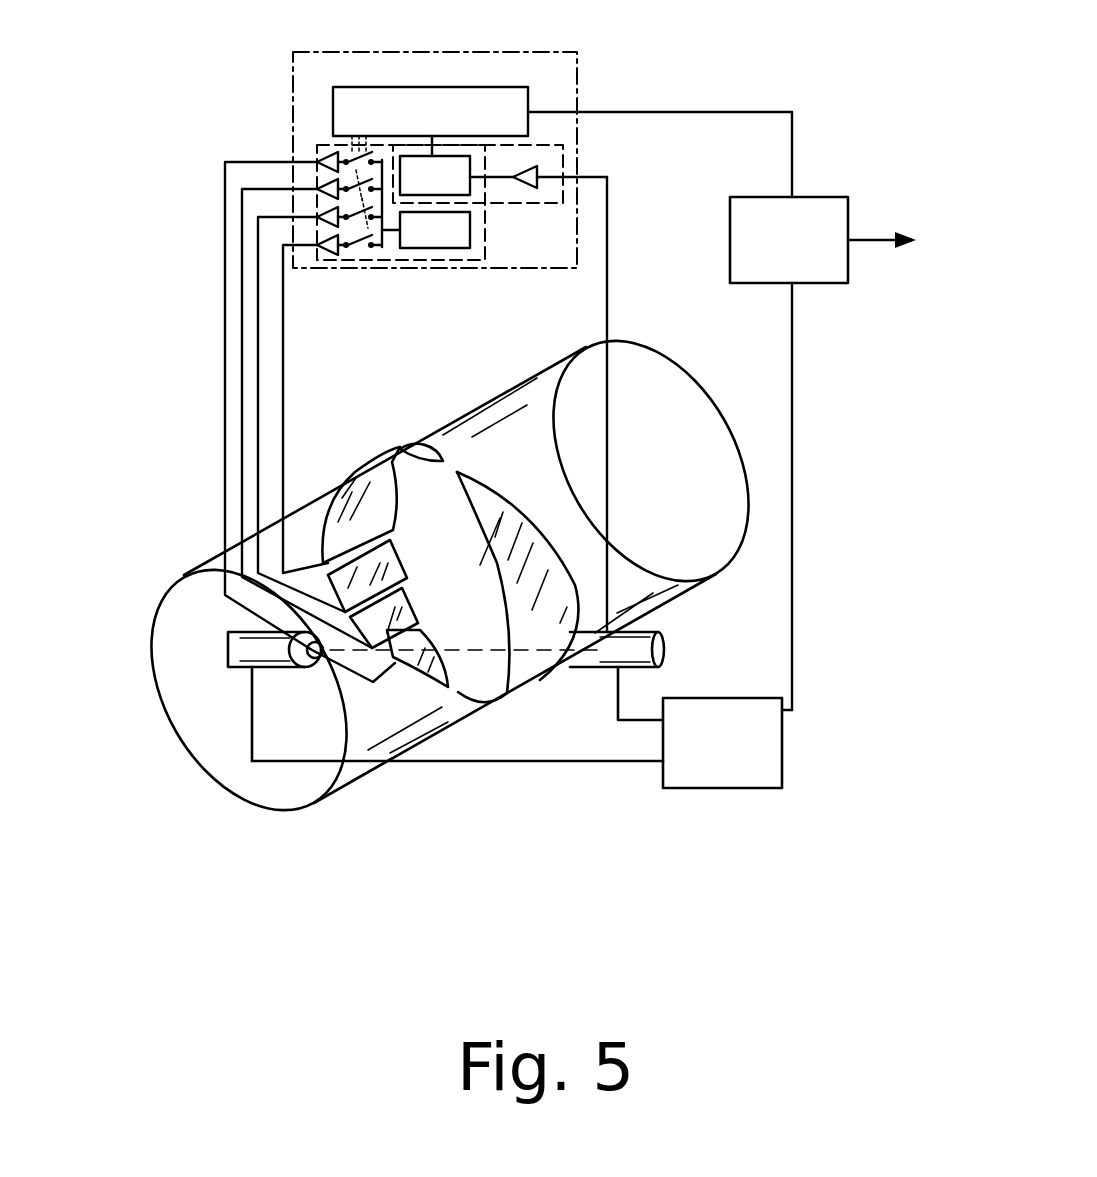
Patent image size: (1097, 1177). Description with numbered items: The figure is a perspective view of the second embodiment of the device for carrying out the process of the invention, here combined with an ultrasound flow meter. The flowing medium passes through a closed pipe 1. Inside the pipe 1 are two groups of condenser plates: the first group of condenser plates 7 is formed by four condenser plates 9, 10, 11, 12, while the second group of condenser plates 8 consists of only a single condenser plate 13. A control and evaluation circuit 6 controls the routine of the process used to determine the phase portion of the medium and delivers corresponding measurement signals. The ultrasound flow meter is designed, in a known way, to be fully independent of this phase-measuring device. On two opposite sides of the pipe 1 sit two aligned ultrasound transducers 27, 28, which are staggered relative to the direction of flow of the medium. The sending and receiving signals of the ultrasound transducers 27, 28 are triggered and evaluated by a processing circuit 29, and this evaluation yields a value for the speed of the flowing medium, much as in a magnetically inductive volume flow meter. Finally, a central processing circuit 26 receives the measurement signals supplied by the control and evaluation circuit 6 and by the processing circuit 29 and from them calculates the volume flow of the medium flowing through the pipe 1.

The pipe 1 is at (210, 562).
The control and evaluation circuit 6 is at (560, 72).
The first group of condenser plates 7 is at (411, 410).
The second group of condenser plates 8 is at (531, 460).
The condenser plate 9 is at (412, 660).
The condenser plate 10 is at (388, 660).
The condenser plate 11 is at (373, 575).
The condenser plate 12 is at (335, 495).
The condenser plate 13 is at (555, 610).
The central processing circuit 26 is at (805, 196).
The ultrasound transducer 27 is at (252, 650).
The ultrasound transducer 28 is at (628, 648).
The processing circuit 29 is at (750, 765).